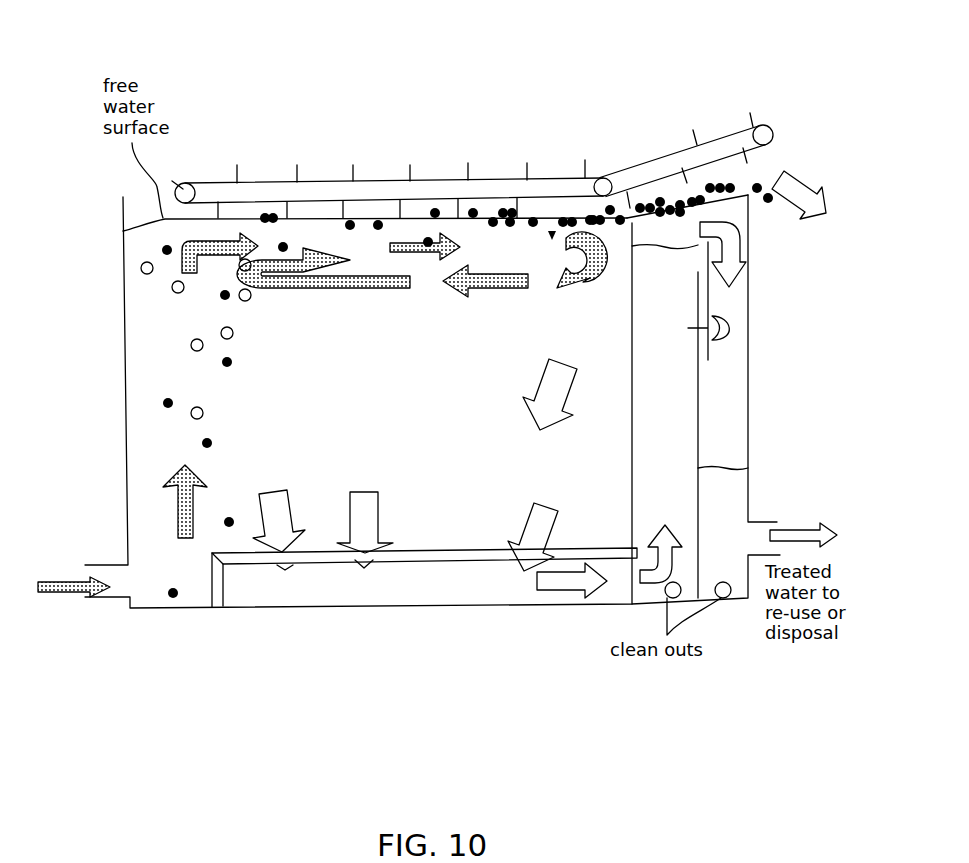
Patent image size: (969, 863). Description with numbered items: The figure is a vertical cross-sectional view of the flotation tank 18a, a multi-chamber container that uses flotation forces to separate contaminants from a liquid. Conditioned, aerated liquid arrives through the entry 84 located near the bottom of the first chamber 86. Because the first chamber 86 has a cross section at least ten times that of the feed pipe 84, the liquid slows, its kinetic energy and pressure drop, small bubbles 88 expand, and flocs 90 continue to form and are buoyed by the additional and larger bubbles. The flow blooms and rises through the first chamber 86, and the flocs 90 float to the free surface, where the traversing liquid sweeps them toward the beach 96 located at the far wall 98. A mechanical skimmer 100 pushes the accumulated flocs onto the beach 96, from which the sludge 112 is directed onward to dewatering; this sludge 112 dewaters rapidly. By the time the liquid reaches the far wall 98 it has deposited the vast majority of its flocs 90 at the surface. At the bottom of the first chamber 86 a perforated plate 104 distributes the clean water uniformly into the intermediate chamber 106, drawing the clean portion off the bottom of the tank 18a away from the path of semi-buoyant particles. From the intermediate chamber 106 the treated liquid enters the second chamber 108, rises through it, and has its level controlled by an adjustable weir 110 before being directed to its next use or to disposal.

The flotation tank 18a is at (343, 106).
The mechanical skimmer 100 is at (183, 190).
The sludge 112 is at (678, 210).
The beach 96 is at (698, 204).
The far wall 98 is at (631, 373).
The adjustable weir 110 is at (708, 360).
The small bubbles 88 is at (172, 288).
The flocs 90 is at (168, 408).
The first chamber 86 is at (449, 463).
The perforated plate 104 is at (430, 550).
The intermediate chamber 106 is at (468, 593).
The second chamber 108 is at (685, 496).
The entry 84 is at (98, 656).